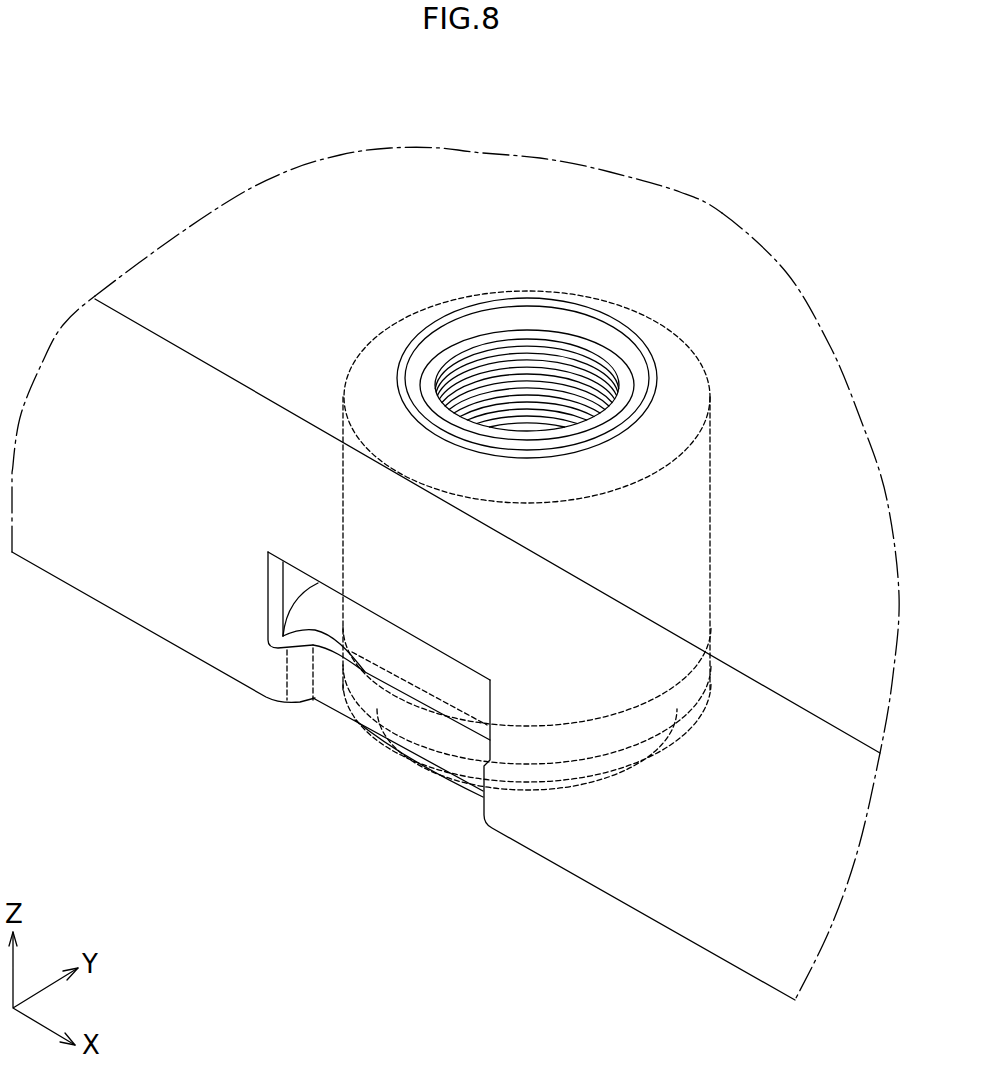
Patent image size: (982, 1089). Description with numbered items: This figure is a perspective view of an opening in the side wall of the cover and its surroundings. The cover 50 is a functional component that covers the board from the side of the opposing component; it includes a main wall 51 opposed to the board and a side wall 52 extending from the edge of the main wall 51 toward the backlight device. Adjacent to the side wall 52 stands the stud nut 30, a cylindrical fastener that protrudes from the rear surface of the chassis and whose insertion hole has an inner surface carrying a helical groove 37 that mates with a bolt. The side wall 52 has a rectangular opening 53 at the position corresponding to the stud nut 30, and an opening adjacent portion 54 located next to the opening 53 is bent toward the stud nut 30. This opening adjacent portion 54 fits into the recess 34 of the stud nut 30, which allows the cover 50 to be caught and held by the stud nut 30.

The stud nut 30 is at (711, 357).
The recess 34 is at (400, 700).
The helical groove 37 is at (547, 382).
The cover 50 is at (804, 462).
The main wall 51 is at (362, 196).
The side wall 52 is at (125, 367).
The rectangular opening 53 is at (265, 634).
The opening adjacent portion 54 is at (333, 681).